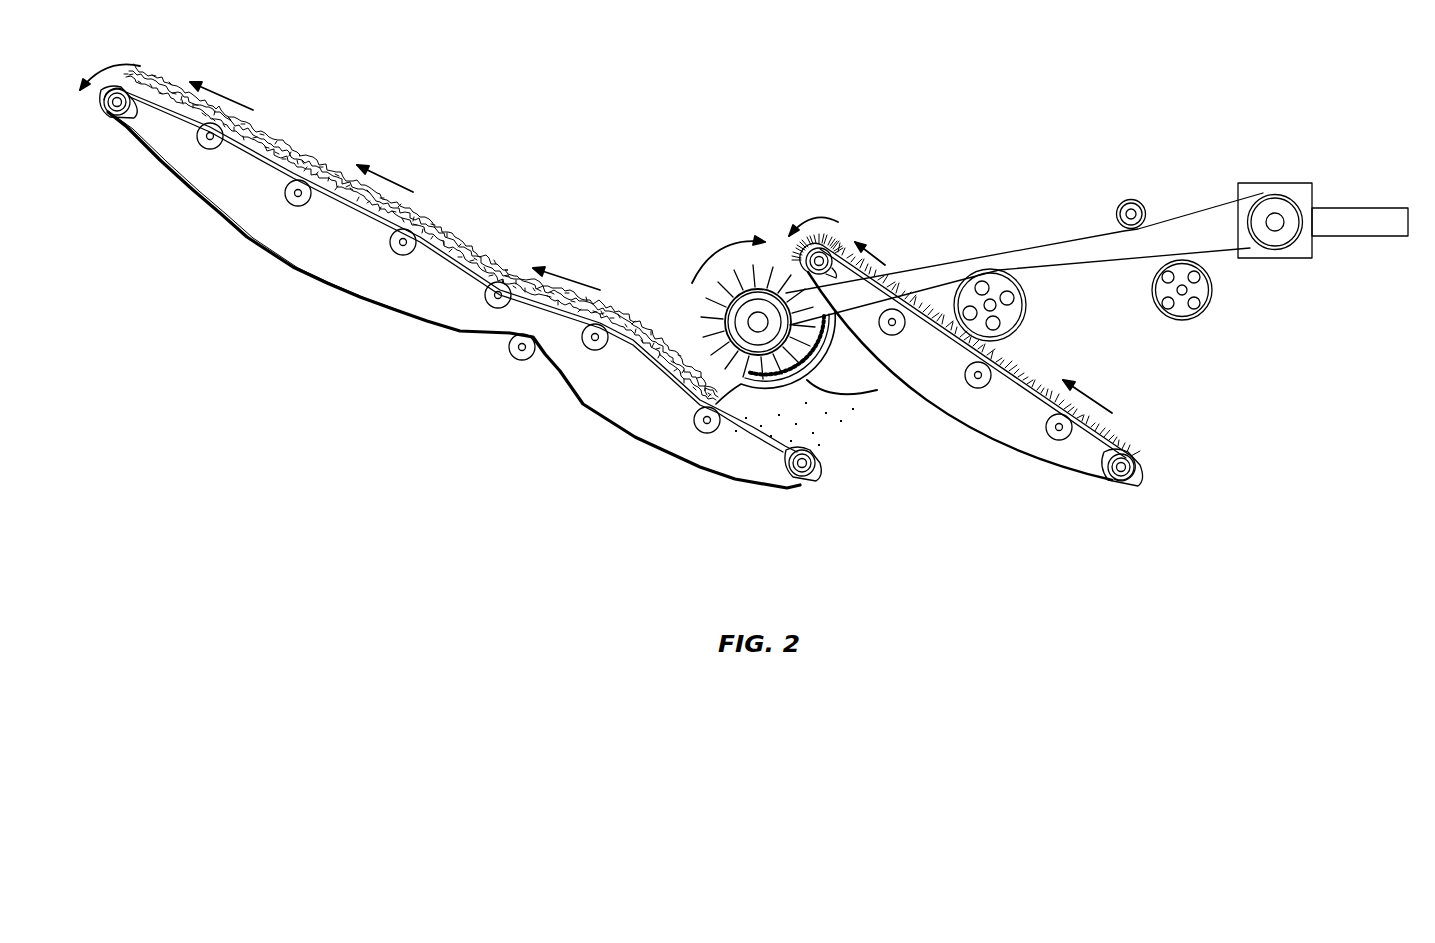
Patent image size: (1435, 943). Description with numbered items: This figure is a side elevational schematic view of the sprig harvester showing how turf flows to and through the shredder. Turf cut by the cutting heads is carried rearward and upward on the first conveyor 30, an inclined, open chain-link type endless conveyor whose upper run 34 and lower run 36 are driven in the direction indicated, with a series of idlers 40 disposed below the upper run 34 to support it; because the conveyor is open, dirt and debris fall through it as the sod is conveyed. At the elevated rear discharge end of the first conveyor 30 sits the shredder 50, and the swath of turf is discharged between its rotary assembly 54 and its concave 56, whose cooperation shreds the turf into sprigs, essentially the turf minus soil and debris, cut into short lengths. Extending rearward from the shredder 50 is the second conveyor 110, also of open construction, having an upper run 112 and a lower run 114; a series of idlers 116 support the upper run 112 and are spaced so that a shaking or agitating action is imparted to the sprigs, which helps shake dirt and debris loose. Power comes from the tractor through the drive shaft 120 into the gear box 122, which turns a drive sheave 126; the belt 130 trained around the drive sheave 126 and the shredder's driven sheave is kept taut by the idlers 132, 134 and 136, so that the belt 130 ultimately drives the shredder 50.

The first conveyor 30 is at (967, 406).
The upper run 34 is at (1002, 370).
The lower run 36 is at (973, 430).
The support rollers 40 is at (890, 330).
The shredder 50 is at (732, 269).
The rotary assembly 54 is at (686, 302).
The concave 56 is at (818, 418).
The second conveyor 110 is at (461, 299).
The upper run 112 is at (758, 432).
The lower run 114 is at (217, 212).
The idlers 116 is at (296, 207).
The drive shaft 120 is at (1382, 220).
The gear box 122 is at (1302, 193).
The drive sheave 126 is at (1278, 238).
The belt 130 is at (1198, 207).
The idler 132 is at (1012, 318).
The idler 134 is at (1200, 292).
The idler 136 is at (1142, 203).